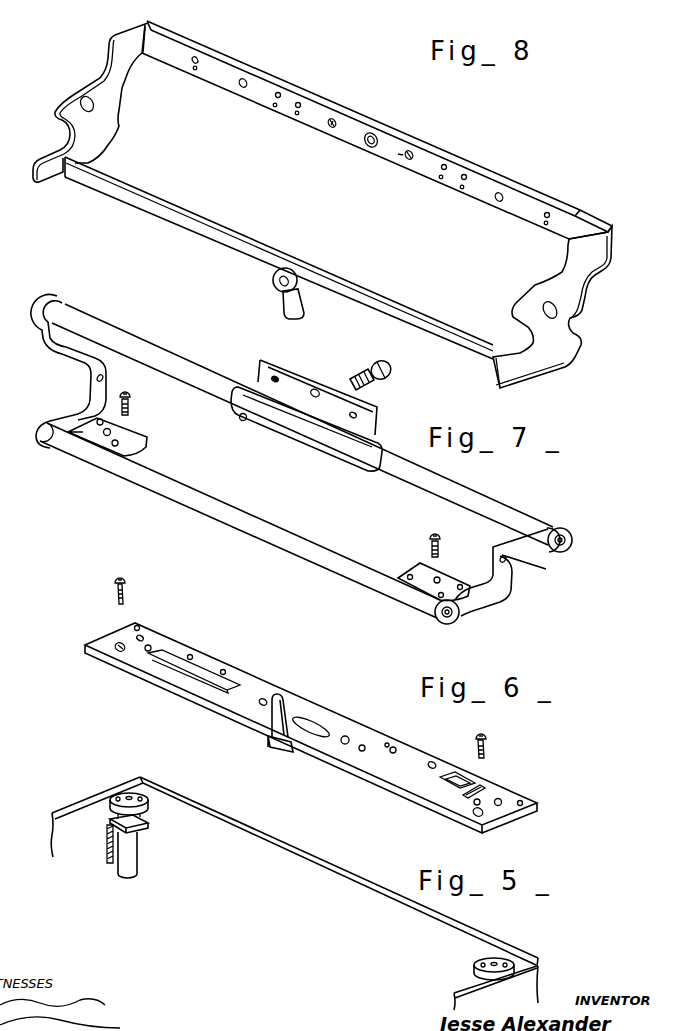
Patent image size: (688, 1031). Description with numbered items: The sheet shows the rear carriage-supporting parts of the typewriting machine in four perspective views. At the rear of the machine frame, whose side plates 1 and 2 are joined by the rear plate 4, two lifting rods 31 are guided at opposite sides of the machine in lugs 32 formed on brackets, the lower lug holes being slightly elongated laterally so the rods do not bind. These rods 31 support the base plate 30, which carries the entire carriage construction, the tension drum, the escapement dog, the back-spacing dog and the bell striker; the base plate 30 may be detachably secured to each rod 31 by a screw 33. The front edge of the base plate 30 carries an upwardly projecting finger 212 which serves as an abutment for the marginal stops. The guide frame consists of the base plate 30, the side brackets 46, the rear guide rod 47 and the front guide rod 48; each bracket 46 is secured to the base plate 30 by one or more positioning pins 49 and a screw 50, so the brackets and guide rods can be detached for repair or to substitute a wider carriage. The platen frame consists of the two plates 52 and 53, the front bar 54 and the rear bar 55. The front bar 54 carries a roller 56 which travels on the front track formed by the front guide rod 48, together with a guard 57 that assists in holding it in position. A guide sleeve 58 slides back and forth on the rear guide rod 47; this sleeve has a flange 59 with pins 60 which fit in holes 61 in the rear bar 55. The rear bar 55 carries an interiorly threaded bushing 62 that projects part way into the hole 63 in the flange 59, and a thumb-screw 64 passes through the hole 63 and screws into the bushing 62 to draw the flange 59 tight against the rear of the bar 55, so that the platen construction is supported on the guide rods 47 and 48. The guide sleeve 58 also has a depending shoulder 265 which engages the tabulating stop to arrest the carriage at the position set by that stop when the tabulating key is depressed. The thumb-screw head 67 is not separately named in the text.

In FIG. 5, the side plate 1 is at (68, 818).
In FIG. 5, the side plate 2 is at (525, 986).
In FIG. 5, the rear plate 4 is at (294, 866).
In FIG. 6, the base plate 30 is at (394, 780).
In FIG. 5, the rod 31 is at (132, 868).
In FIG. 5, the lug 32 is at (148, 827).
In FIG. 6, the screw 33 is at (114, 590).
In FIG. 7, the side bracket 46 is at (78, 410).
In FIG. 7, the rear guide rod 47 is at (167, 362).
In FIG. 7, the front guide rod 48 is at (228, 513).
In FIG. 6, the positioning pin 49 is at (149, 646).
In FIG. 7, the screw 50 is at (131, 406).
In FIG. 8, the plate 52 is at (73, 107).
In FIG. 8, the plate 53 is at (572, 307).
In FIG. 8, the front bar 54 is at (218, 237).
In FIG. 8, the rear bar 55 is at (228, 73).
In FIG. 8, the roller 56 is at (274, 279).
In FIG. 8, the guard 57 is at (305, 313).
In FIG. 7, the guide sleeve 58 is at (333, 423).
In FIG. 7, the flange 59 is at (292, 383).
In FIG. 7, the pin 60 is at (271, 378).
In FIG. 8, the hole 61 is at (331, 118).
In FIG. 8, the bushing 62 is at (366, 146).
In FIG. 7, the hole 63 is at (318, 391).
In FIG. 7, the thumb-screw 64 is at (392, 378).
In FIG. 7, the thumb screw 67 is at (367, 365).
In FIG. 6, the finger 212 is at (270, 716).
In FIG. 7, the depending shoulder 265 is at (239, 421).